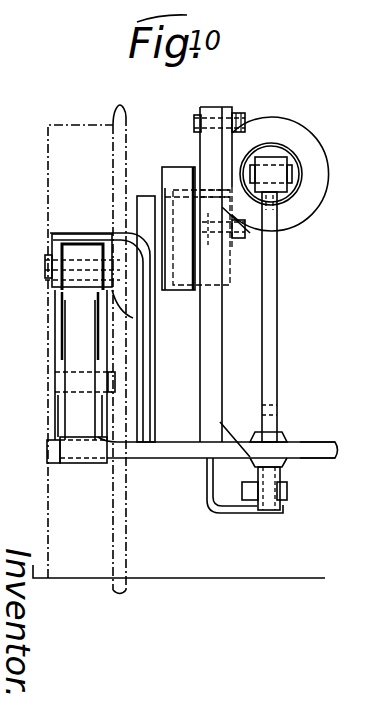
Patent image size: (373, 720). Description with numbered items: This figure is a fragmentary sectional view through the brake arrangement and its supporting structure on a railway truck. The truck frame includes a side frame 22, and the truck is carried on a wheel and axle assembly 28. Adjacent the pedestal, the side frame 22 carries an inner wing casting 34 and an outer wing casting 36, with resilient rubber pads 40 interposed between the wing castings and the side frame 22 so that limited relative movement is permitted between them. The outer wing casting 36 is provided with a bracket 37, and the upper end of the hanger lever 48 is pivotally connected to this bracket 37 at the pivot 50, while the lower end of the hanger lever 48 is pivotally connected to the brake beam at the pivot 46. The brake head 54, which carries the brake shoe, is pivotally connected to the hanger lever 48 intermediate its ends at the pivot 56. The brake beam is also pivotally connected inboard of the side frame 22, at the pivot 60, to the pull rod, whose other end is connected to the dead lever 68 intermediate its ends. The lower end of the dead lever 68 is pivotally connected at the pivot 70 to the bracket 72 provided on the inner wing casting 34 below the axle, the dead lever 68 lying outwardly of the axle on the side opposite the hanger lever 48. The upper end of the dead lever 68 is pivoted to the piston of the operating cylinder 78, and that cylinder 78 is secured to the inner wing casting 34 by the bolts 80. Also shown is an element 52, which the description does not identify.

The side frame 22 is at (173, 432).
The wheel and axle assembly 28 is at (102, 568).
The inner wing casting 34 is at (216, 355).
The outer wing casting 36 is at (143, 196).
The bracket 37 is at (90, 233).
The resilient pad 40 is at (312, 448).
The pivotal connection 46 is at (53, 473).
The hanger lever 48 is at (80, 408).
The pivotal connection 50 is at (52, 262).
The bracket flange 52 is at (50, 233).
The brake head 54 is at (60, 307).
The pivotal connection 56 is at (57, 380).
The pivotal connection 60 is at (283, 432).
The dead lever 68 is at (276, 326).
The pivotal connection 70 is at (288, 492).
The bracket 72 is at (225, 512).
The operating cylinder 78 is at (315, 147).
The bolt 80 is at (223, 138).